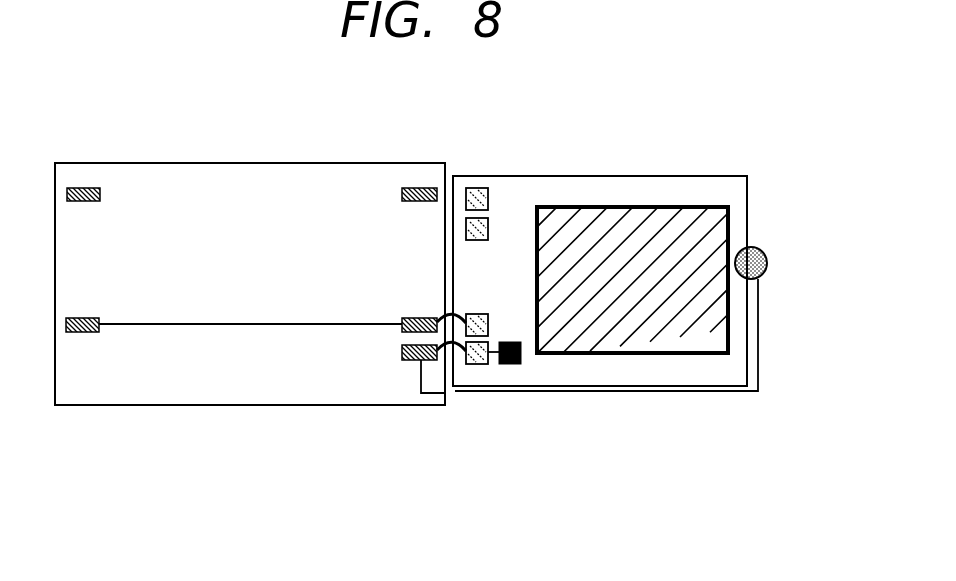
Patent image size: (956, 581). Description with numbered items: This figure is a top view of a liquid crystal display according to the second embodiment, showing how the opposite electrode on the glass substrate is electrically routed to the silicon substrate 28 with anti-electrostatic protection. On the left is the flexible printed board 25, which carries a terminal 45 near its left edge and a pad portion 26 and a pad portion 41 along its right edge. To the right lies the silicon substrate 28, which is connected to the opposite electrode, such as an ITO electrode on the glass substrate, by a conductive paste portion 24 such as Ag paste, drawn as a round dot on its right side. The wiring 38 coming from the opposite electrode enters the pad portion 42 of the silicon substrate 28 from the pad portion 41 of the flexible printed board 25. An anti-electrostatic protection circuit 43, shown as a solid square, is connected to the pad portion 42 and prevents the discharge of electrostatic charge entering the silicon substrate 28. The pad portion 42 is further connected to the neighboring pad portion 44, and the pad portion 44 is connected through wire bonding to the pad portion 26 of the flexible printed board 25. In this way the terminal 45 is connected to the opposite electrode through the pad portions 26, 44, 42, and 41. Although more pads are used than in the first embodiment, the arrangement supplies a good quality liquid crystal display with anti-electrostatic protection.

The flexible printed board 25 is at (241, 176).
The terminal 45 is at (84, 318).
The pad portion 26 is at (414, 316).
The pad portion 41 is at (401, 352).
The wiring 38 is at (421, 378).
The silicon substrate 28 is at (621, 176).
The conductive paste portion 24 is at (768, 263).
The pad portion 44 is at (480, 314).
The pad portion 42 is at (477, 364).
The anti-electrostatic protection circuit 43 is at (513, 364).